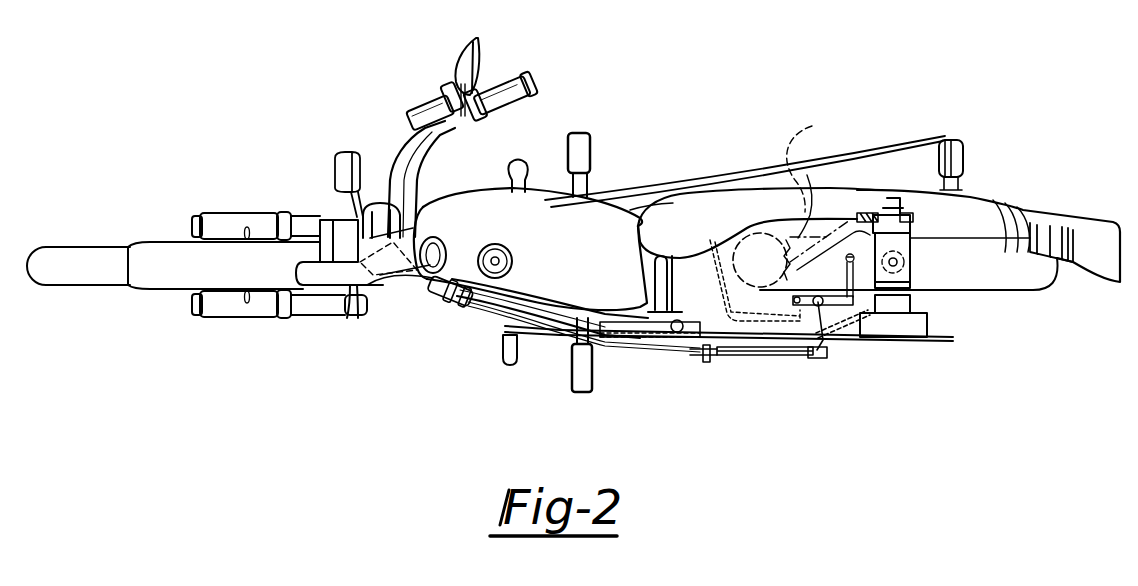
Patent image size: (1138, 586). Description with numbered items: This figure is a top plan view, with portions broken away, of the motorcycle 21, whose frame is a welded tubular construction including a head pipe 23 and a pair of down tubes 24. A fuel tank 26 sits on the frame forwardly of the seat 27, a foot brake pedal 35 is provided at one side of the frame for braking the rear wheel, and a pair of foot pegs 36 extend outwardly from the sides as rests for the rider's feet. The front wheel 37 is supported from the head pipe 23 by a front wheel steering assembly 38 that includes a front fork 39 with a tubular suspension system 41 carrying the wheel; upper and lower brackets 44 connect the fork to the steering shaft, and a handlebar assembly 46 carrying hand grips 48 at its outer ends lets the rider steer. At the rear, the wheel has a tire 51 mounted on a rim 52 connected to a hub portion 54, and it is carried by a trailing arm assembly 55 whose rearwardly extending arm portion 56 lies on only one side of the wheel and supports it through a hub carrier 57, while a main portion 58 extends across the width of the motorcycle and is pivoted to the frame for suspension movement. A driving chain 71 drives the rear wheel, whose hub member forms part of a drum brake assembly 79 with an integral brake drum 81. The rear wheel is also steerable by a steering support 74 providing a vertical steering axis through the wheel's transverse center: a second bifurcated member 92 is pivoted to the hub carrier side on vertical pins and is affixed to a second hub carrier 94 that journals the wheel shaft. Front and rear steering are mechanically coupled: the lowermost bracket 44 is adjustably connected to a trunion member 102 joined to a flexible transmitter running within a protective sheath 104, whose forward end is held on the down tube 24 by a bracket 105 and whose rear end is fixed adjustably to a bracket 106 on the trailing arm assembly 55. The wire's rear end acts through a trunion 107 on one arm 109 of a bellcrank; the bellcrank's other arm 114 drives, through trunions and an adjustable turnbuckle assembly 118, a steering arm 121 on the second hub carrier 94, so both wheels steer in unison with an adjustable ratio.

The motorcycle 21 is at (655, 146).
The head pipe 23 is at (403, 278).
The down tubes 24 is at (510, 304).
The fuel tank 26 is at (597, 213).
The seat 27 is at (686, 218).
The foot brake pedal 35 is at (514, 162).
The foot pegs 36 is at (586, 133).
The front wheel 37 is at (108, 279).
The front wheel steering assembly 38 is at (385, 170).
The front fork 39 is at (306, 218).
The tubular suspension system 41 is at (216, 212).
The upper and lower brackets 44 is at (343, 310).
The handlebar assembly 46 is at (428, 164).
The hand grips 48 is at (500, 87).
The tire 51 is at (787, 240).
The rim 52 is at (745, 161).
The hub portion 54 is at (868, 213).
The trailing arm assembly 55 is at (726, 350).
The rearwardly extending arm portion 56 is at (753, 323).
The hub carrier 57 is at (923, 303).
The main portion 58 is at (660, 288).
The driving chain 71 is at (917, 342).
The steering support 74 is at (925, 255).
The drum brake assembly 79 is at (930, 313).
The brake drum 81 is at (913, 328).
The second bifurcated member 92 is at (910, 232).
The second hub carrier 94 is at (924, 232).
The trunion member 102 is at (440, 244).
The protective sheath 104 is at (552, 342).
The bracket 105 is at (452, 300).
The bracket 106 is at (707, 362).
The trunion 107 is at (813, 359).
The arm 109 is at (818, 350).
The arm 114 is at (818, 298).
The turnbuckle assembly 118 is at (850, 322).
The steering arm 121 is at (823, 198).